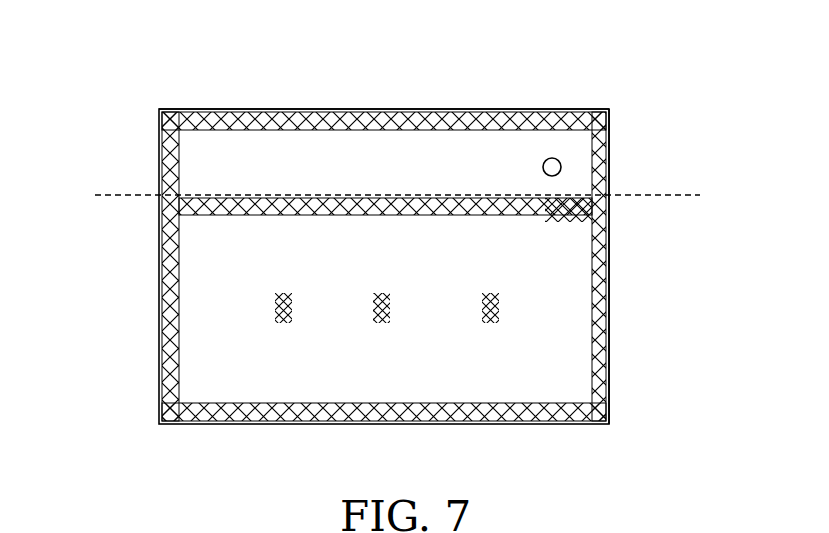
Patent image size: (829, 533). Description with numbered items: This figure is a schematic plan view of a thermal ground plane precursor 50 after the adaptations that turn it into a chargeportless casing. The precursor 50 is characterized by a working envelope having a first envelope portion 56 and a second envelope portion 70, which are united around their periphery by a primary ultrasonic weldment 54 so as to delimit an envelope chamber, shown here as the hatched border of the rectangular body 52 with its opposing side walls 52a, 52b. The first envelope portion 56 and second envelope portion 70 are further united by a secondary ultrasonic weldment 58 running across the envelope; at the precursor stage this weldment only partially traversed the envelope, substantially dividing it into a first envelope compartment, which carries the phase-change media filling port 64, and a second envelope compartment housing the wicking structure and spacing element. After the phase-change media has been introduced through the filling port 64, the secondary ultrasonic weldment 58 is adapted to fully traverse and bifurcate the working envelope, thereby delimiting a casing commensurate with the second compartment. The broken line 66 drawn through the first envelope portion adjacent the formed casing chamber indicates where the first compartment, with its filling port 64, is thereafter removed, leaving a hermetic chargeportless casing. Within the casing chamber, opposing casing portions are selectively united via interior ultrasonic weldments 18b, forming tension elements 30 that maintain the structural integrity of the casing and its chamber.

The thermal ground plane precursor 50 is at (650, 106).
The enclosure 52 is at (152, 311).
The enclosure first side wall 52a is at (160, 152).
The enclosure bottom wall 52b is at (158, 387).
The primary ultrasonic weldment 54 is at (443, 110).
The first envelope portion 56 is at (227, 158).
The secondary ultrasonic weldment 58 is at (257, 218).
The phase-change media filling port 64 is at (543, 158).
The section plane line 66 is at (678, 196).
The second envelope portion 70 is at (562, 362).
The tension elements 30 is at (368, 316).
The interior ultrasonic weldment 18b is at (483, 313).